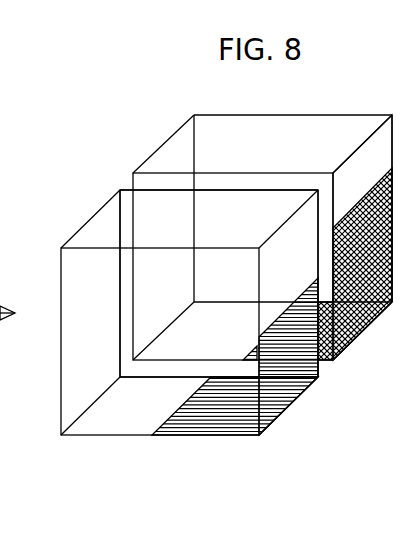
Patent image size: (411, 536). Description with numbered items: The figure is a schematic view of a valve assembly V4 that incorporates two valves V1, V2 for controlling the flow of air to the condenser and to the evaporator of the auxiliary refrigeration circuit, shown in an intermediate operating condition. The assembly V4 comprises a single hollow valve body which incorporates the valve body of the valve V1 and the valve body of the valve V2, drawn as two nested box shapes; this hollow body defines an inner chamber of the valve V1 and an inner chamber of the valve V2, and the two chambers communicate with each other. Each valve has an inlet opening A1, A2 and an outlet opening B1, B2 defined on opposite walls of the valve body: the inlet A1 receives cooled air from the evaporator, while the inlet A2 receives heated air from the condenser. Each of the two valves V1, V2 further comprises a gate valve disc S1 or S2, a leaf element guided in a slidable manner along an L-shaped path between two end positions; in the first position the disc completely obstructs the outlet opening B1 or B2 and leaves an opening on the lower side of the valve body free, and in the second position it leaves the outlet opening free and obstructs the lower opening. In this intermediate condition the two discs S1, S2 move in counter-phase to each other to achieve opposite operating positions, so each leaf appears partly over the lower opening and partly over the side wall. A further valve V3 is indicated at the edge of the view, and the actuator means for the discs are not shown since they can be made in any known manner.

The valve V1 is at (165, 137).
The valve V2 is at (72, 226).
The third volume V3 is at (408, 230).
The valve assembly V4 is at (108, 146).
The inlet opening A1 is at (79, 365).
The inlet opening A2 is at (152, 181).
The outlet opening B1 is at (285, 245).
The outlet opening B2 is at (380, 147).
The gate valve disc S1 is at (285, 385).
The gate valve disc S2 is at (378, 322).